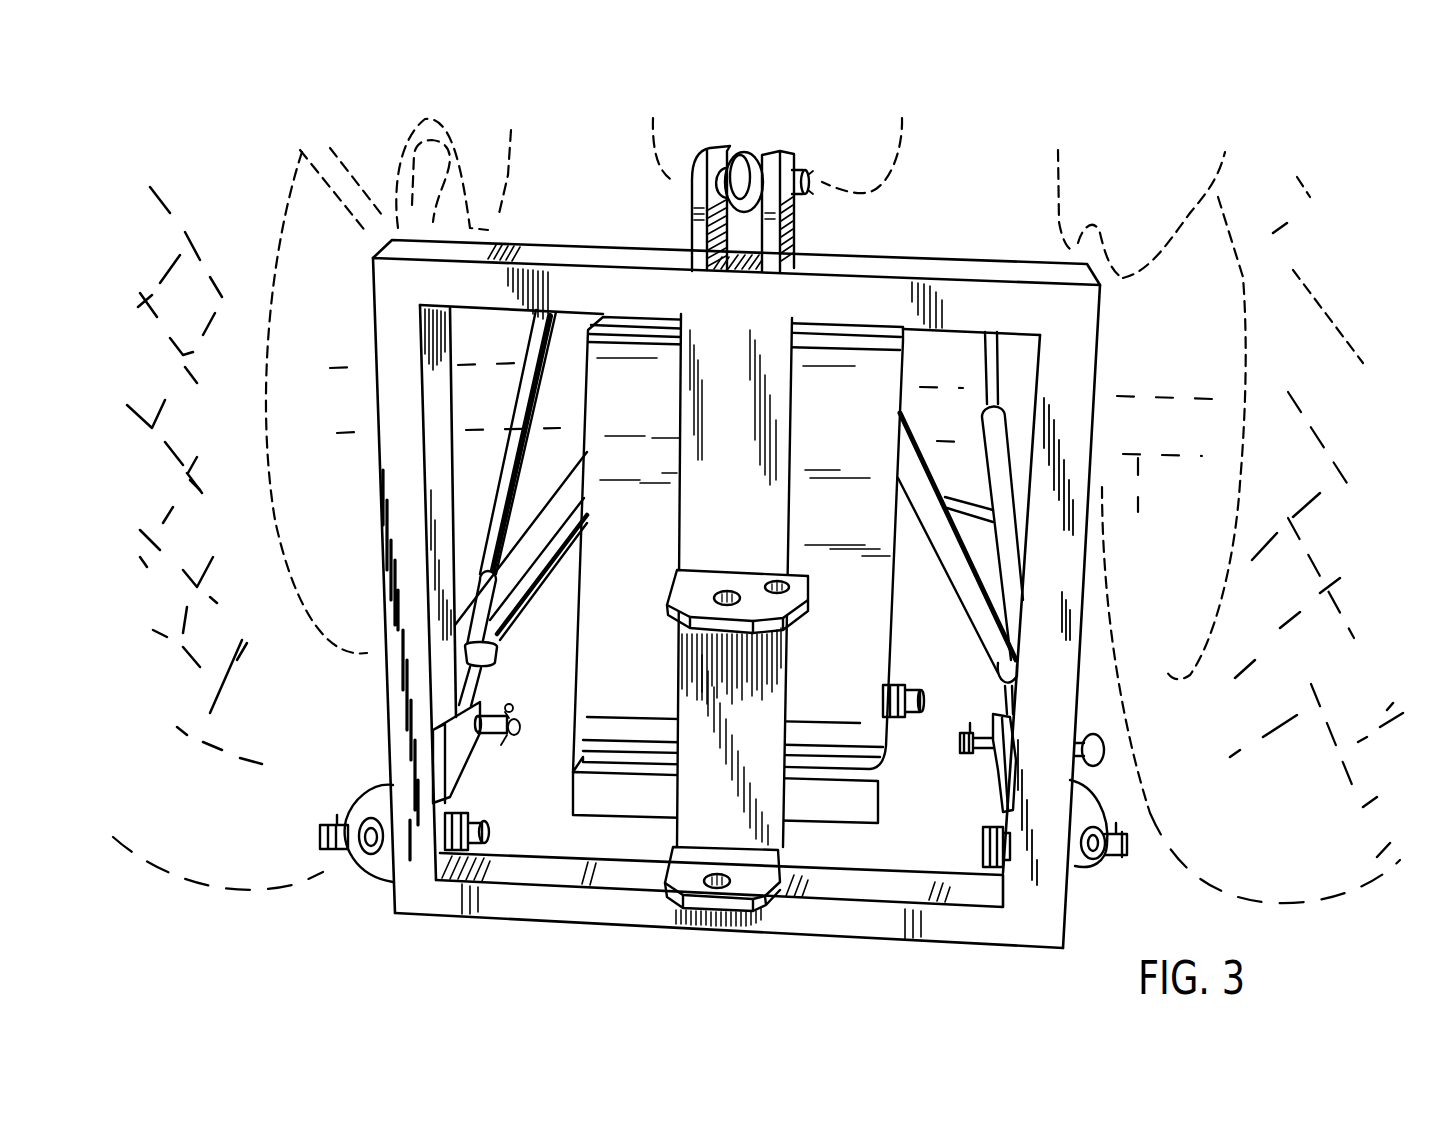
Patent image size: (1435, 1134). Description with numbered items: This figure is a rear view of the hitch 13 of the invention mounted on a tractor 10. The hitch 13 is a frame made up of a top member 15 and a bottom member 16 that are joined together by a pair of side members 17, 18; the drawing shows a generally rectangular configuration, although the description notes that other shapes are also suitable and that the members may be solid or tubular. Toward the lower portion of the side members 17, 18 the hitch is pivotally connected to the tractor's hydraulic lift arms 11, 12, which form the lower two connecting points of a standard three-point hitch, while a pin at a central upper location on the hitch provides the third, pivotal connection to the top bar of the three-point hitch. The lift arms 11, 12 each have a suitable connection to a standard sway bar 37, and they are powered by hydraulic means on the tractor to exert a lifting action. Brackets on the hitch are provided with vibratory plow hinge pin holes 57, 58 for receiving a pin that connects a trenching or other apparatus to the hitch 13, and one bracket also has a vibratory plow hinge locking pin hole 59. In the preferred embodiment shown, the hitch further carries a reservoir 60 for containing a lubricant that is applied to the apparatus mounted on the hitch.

The tractor 10 is at (867, 147).
The hydraulic lift arm 11 is at (373, 867).
The hydraulic lift arm 12 is at (993, 447).
The hitch 13 is at (745, 408).
The top member 15 is at (557, 281).
The bottom member 16 is at (553, 871).
The side member 17 is at (412, 458).
The side member 18 is at (1065, 575).
The sway bar 37 is at (522, 420).
The vibratory plow hinge pin hole 57 is at (720, 592).
The vibratory plow hinge pin hole 58 is at (718, 900).
The vibratory plow hinge locking pin hole 59 is at (778, 583).
The reservoir 60 is at (643, 429).